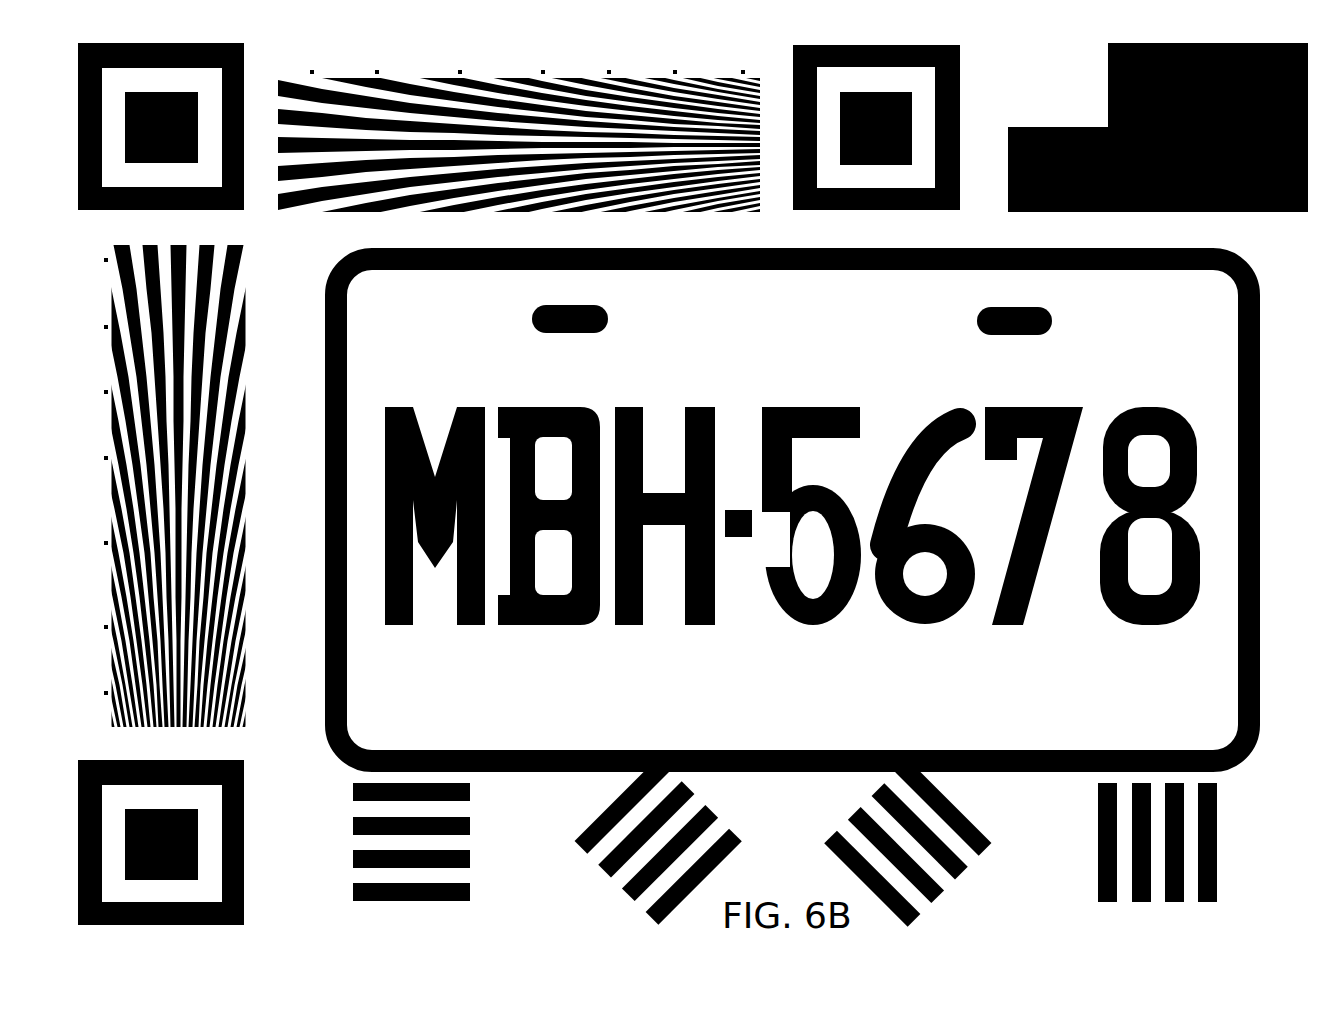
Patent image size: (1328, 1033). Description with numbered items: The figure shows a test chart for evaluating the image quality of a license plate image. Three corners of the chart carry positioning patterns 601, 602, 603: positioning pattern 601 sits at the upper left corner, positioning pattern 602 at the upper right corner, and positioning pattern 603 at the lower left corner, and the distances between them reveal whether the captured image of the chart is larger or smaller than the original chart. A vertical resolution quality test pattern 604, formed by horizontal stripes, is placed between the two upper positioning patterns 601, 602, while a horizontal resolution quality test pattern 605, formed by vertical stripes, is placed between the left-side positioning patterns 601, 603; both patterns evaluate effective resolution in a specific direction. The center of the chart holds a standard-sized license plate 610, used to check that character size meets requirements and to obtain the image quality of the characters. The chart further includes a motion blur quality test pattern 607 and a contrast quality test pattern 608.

The positioning pattern 601 is at (142, 241).
The positioning pattern 602 is at (850, 238).
The positioning pattern 603 is at (133, 961).
The vertical resolution quality test pattern 604 is at (493, 238).
The horizontal resolution quality test pattern 605 is at (260, 508).
The motion blur quality test pattern 607 is at (1243, 848).
The contrast quality test pattern 608 is at (1198, 241).
The license plate 610 is at (1289, 305).